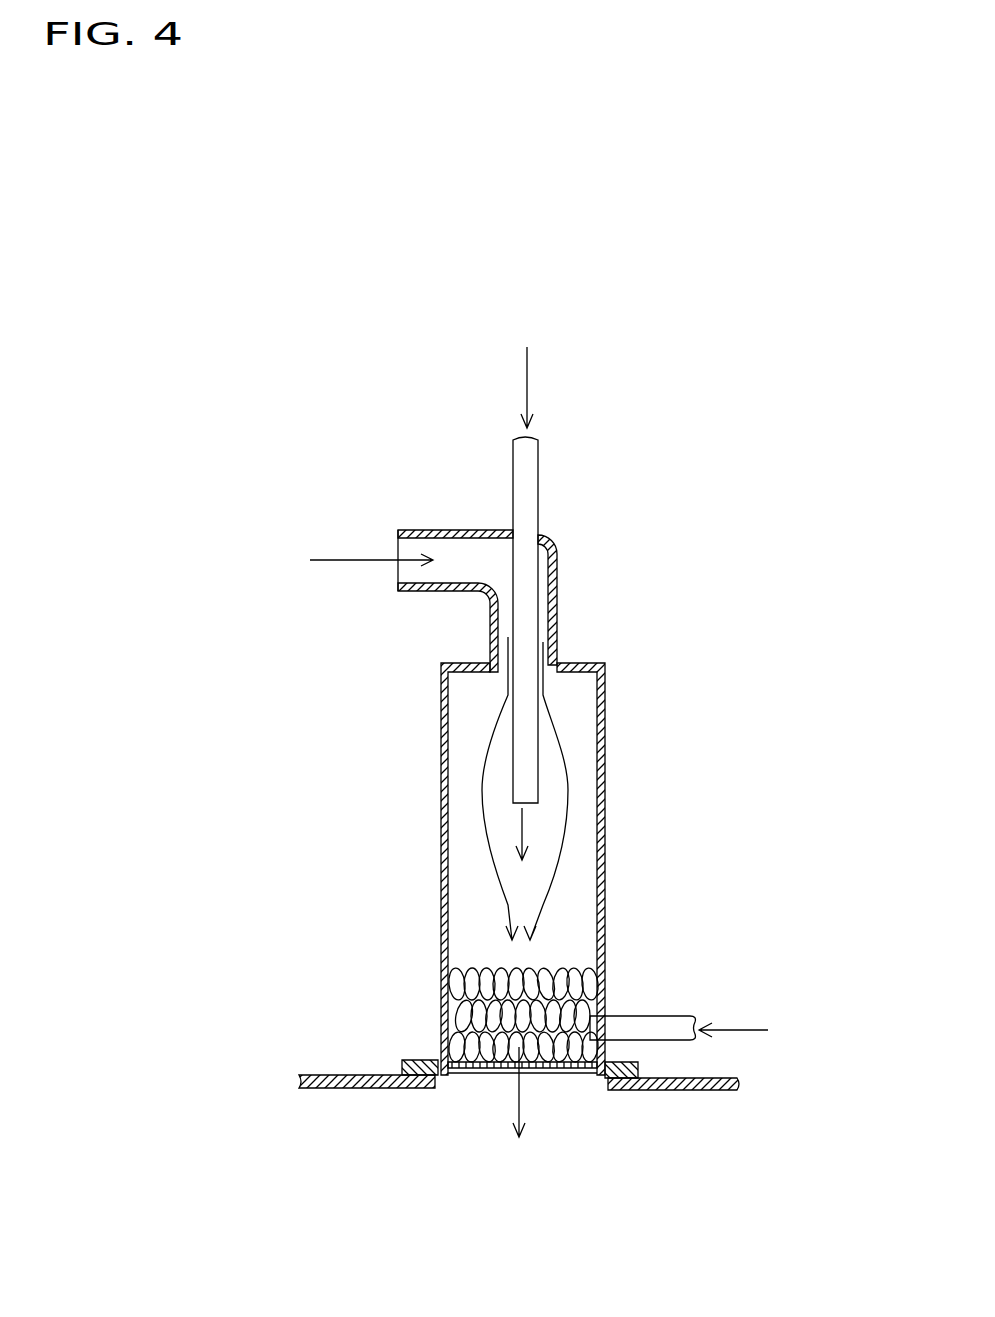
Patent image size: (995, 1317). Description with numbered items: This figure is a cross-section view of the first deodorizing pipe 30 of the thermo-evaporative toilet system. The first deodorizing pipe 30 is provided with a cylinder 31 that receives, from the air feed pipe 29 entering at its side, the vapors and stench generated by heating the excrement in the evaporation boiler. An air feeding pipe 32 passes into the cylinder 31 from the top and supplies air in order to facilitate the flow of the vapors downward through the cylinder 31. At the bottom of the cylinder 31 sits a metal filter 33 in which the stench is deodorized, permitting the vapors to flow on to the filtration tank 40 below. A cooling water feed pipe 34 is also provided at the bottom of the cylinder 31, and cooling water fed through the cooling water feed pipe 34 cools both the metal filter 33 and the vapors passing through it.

The air feed pipe 29 is at (437, 528).
The first deodorizing pipe 30 is at (690, 558).
The cylinder 31 is at (440, 787).
The air feeding pipe 32 is at (530, 480).
The metal filter 33 is at (537, 968).
The cooling water feed pipe 34 is at (667, 1015).
The filtration tank 40 is at (688, 1157).